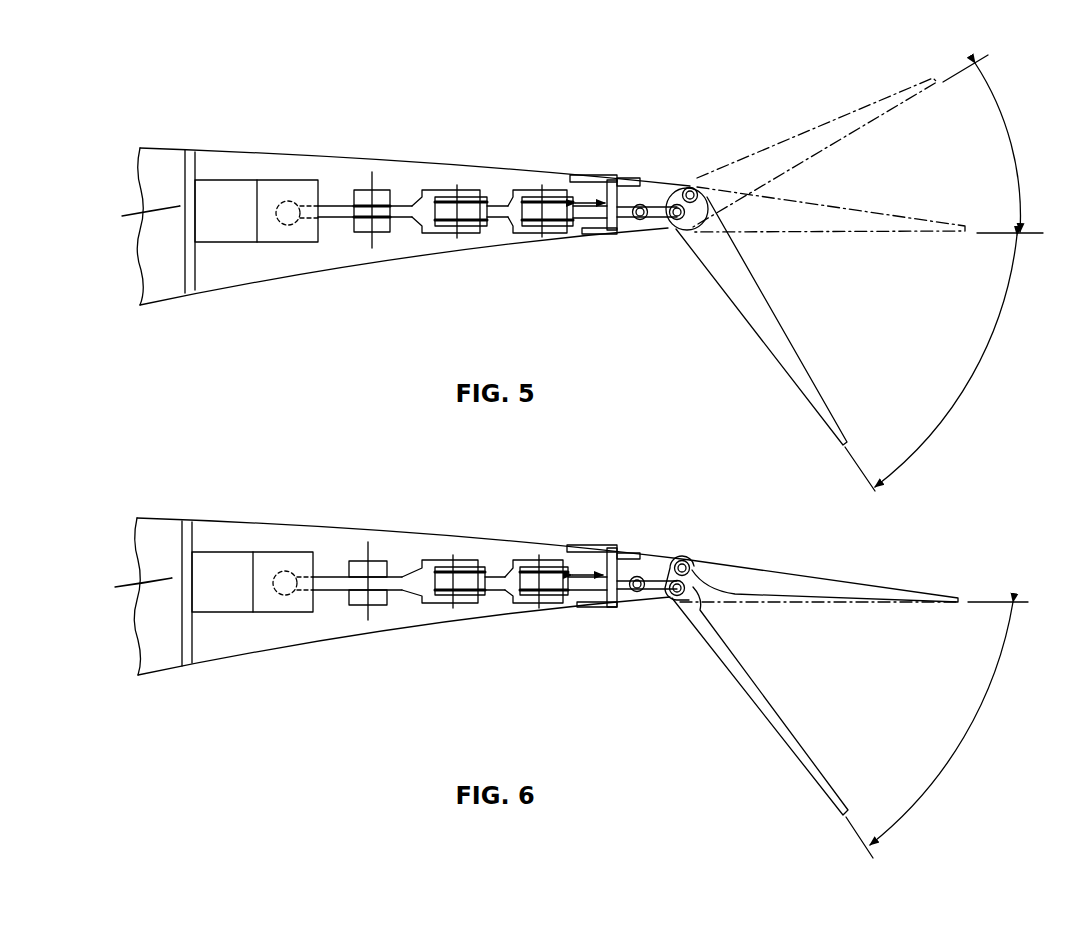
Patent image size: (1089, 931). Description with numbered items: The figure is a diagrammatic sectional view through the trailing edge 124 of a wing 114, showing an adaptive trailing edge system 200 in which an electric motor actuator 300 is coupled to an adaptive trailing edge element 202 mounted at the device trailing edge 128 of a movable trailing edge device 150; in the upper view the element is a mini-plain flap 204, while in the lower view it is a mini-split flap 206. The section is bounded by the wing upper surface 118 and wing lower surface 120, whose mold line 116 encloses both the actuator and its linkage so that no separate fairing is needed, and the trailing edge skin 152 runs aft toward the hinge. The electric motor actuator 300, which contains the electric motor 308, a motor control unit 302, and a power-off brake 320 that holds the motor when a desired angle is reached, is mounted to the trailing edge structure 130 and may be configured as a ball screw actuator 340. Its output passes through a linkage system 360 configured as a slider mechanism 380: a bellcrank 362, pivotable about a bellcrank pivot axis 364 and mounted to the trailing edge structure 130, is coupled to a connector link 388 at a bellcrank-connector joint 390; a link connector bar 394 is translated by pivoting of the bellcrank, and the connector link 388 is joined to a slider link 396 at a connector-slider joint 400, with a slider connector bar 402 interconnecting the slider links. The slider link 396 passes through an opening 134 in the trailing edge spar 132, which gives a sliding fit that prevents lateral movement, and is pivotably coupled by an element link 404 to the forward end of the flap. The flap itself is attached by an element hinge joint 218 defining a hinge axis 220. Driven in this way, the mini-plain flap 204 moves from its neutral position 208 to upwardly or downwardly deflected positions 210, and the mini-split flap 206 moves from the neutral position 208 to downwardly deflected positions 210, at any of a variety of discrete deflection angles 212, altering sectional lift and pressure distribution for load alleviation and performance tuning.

In FIG. 5, the wing 114 is at (150, 147).
In FIG. 6, the wing 114 is at (148, 520).
In FIG. 5, the mold line 116 is at (227, 152).
In FIG. 6, the mold line 116 is at (215, 522).
In FIG. 5, the wing upper surface 118 is at (182, 148).
In FIG. 6, the wing upper surface 118 is at (180, 520).
In FIG. 5, the wing lower surface 120 is at (153, 305).
In FIG. 6, the wing lower surface 120 is at (153, 675).
In FIG. 5, the trailing edge 124 is at (283, 153).
In FIG. 6, the trailing edge 124 is at (258, 524).
In FIG. 5, the device trailing edge 128 is at (320, 158).
In FIG. 6, the device trailing edge 128 is at (295, 527).
In FIG. 5, the trailing edge structure 130 is at (183, 262).
In FIG. 6, the trailing edge structure 130 is at (183, 632).
In FIG. 5, the trailing edge spar 132 is at (607, 177).
In FIG. 6, the trailing edge spar 132 is at (607, 548).
In FIG. 5, the opening 134 is at (630, 220).
In FIG. 6, the opening 134 is at (358, 564).
In FIG. 5, the trailing edge device 150 is at (502, 166).
In FIG. 6, the trailing edge device 150 is at (478, 537).
In FIG. 5, the trailing edge skin 152 is at (533, 170).
In FIG. 6, the trailing edge skin 152 is at (512, 543).
In FIG. 5, the adaptive trailing edge system 200 is at (422, 190).
In FIG. 6, the adaptive trailing edge system 200 is at (422, 562).
In FIG. 5, the adaptive trailing edge element 202 is at (748, 262).
In FIG. 6, the adaptive trailing edge element 202 is at (733, 655).
In FIG. 5, the mini-plain flap 204 is at (770, 298).
In FIG. 6, the mini-split flap 206 is at (765, 695).
In FIG. 5, the neutral position 208 is at (893, 231).
In FIG. 6, the neutral position 208 is at (893, 602).
In FIG. 5, the deflected position 210 is at (860, 122).
In FIG. 6, the deflected position 210 is at (797, 737).
In FIG. 5, the deflection angle 212 is at (1012, 140).
In FIG. 6, the deflection angle 212 is at (980, 715).
In FIG. 5, the element hinge joint 218 is at (700, 190).
In FIG. 6, the element hinge joint 218 is at (693, 565).
In FIG. 5, the hinge axis 220 is at (693, 188).
In FIG. 6, the hinge axis 220 is at (683, 560).
In FIG. 5, the electric motor actuator 300 is at (242, 242).
In FIG. 6, the electric motor actuator 300 is at (235, 612).
In FIG. 5, the motor control unit 302 is at (260, 242).
In FIG. 6, the motor control unit 302 is at (253, 612).
In FIG. 5, the electric motor 308 is at (212, 242).
In FIG. 6, the electric motor 308 is at (205, 612).
In FIG. 5, the power-off brake 320 is at (300, 242).
In FIG. 6, the power-off brake 320 is at (280, 612).
In FIG. 5, the ball screw actuator 340 is at (318, 242).
In FIG. 6, the ball screw actuator 340 is at (305, 612).
In FIG. 5, the linkage system 360 is at (362, 232).
In FIG. 6, the linkage system 360 is at (352, 605).
In FIG. 5, the bellcrank 362 is at (398, 220).
In FIG. 6, the bellcrank 362 is at (400, 590).
In FIG. 5, the bellcrank pivot axis 364 is at (375, 172).
In FIG. 6, the bellcrank pivot axis 364 is at (370, 548).
In FIG. 5, the slider mechanism 380 is at (558, 230).
In FIG. 6, the slider mechanism 380 is at (558, 603).
In FIG. 5, the connector link 388 is at (472, 233).
In FIG. 6, the connector link 388 is at (485, 600).
In FIG. 5, the bellcrank-connector joint 390 is at (453, 238).
In FIG. 6, the bellcrank-connector joint 390 is at (433, 600).
In FIG. 5, the link connector bar 394 is at (457, 185).
In FIG. 6, the link connector bar 394 is at (453, 555).
In FIG. 5, the slider link 396 is at (593, 234).
In FIG. 6, the slider link 396 is at (592, 603).
In FIG. 5, the connector-slider joint 400 is at (532, 233).
In FIG. 6, the connector-slider joint 400 is at (548, 605).
In FIG. 5, the slider connector bar 402 is at (555, 202).
In FIG. 6, the slider connector bar 402 is at (553, 573).
In FIG. 5, the element link 404 is at (668, 230).
In FIG. 6, the element link 404 is at (668, 600).